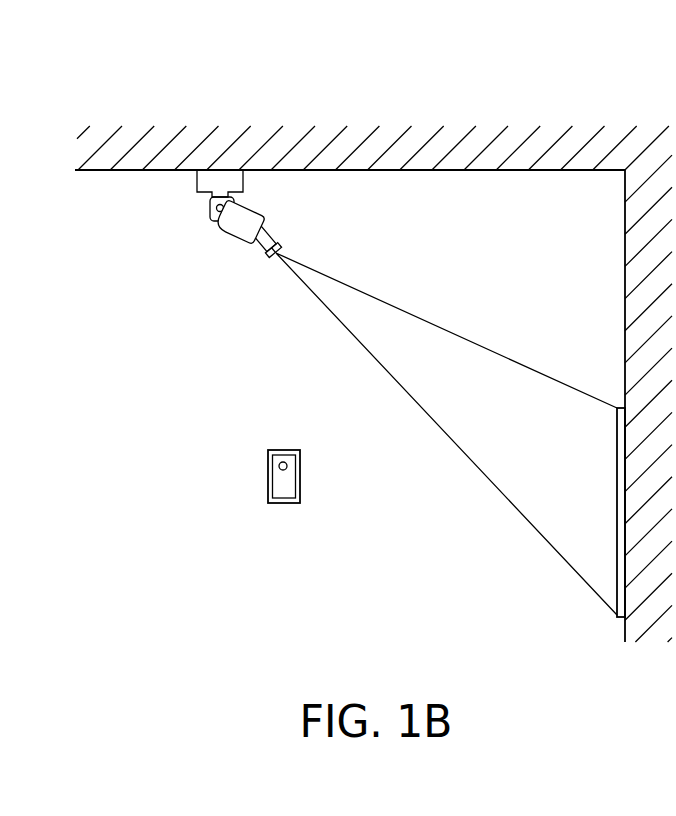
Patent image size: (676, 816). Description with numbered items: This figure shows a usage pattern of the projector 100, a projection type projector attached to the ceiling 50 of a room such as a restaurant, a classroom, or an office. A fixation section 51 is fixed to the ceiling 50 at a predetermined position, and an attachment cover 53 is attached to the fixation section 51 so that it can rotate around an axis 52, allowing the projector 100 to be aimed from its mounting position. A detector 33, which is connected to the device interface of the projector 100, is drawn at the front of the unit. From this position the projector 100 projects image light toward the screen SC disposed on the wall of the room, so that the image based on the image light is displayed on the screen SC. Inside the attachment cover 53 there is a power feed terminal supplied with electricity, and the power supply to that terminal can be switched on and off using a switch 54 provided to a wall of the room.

The ceiling 50 is at (386, 171).
The fixation section 51 is at (197, 178).
The axis 52 is at (214, 212).
The attachment cover 53 is at (266, 214).
The detector 33 is at (272, 252).
The projector 100 is at (305, 264).
The switch 54 is at (283, 449).
The screen SC is at (616, 523).